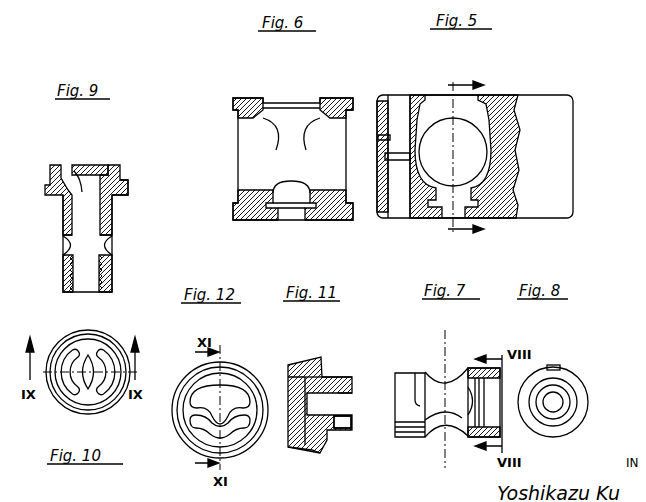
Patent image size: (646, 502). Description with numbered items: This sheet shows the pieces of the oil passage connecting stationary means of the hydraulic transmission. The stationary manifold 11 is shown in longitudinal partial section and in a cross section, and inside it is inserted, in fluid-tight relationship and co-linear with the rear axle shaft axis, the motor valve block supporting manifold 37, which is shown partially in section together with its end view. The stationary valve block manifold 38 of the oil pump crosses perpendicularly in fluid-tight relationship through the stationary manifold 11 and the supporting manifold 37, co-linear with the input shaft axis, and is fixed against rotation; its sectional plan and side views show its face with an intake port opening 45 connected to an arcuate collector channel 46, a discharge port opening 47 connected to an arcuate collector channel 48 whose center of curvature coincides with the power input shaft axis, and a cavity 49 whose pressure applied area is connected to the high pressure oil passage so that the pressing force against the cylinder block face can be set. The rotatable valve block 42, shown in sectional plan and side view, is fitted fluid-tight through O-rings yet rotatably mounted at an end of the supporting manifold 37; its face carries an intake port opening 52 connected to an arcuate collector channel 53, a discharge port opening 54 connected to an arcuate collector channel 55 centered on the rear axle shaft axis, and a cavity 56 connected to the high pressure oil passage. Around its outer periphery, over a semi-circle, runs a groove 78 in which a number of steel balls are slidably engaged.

In FIG. 6, the stationary manifold 11 is at (340, 98).
In FIG. 5, the stationary manifold 11 is at (499, 97).
In FIG. 7, the motor valve block supporting manifold 37 is at (473, 366).
In FIG. 8, the motor valve block supporting manifold 37 is at (574, 376).
In FIG. 9, the stationary valve block manifold 38 is at (62, 221).
In FIG. 11, the rotatable valve block 42 is at (334, 380).
In FIG. 9, the intake port opening 45 is at (63, 167).
In FIG. 10, the intake port opening 45 is at (62, 363).
In FIG. 9, the arcuate collector channel 46 is at (84, 192).
In FIG. 9, the discharge port opening 47 is at (112, 163).
In FIG. 10, the discharge port opening 47 is at (110, 367).
In FIG. 9, the arcuate collector channel 48 is at (122, 183).
In FIG. 9, the cavity 49 is at (91, 164).
In FIG. 12, the intake port opening 52 is at (203, 388).
In FIG. 11, the intake port opening 52 is at (291, 376).
In FIG. 11, the arcuate collector channel 53 is at (311, 368).
In FIG. 12, the discharge port opening 54 is at (207, 433).
In FIG. 11, the discharge port opening 54 is at (290, 432).
In FIG. 11, the arcuate collector channel 55 is at (330, 429).
In FIG. 12, the cavity 56 is at (226, 405).
In FIG. 11, the groove 78 is at (341, 381).